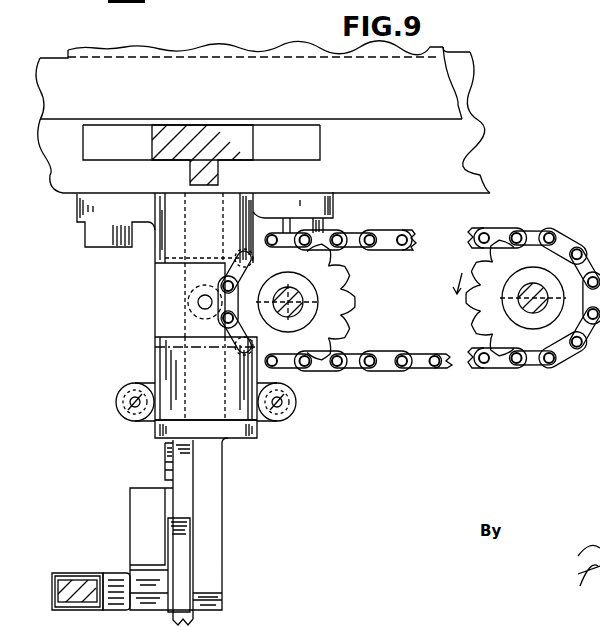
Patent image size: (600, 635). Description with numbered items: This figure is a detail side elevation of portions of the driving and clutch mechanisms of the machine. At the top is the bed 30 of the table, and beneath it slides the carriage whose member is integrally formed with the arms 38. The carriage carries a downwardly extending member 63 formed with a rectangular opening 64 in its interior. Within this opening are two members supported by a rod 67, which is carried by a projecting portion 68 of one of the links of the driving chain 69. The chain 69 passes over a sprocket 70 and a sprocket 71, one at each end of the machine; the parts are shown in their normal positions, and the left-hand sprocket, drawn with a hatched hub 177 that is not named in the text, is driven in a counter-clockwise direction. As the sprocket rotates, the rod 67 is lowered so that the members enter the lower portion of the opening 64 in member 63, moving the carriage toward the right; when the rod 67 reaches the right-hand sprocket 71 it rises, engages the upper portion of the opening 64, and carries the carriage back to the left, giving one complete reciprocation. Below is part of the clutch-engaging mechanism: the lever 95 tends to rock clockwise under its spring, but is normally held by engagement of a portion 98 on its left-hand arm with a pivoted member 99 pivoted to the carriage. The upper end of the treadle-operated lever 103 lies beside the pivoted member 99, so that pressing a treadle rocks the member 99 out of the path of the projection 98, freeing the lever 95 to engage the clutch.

The bed 30 is at (199, 57).
The arms 38 is at (232, 161).
The downwardly extending member 63 is at (160, 358).
The rectangular opening 64 is at (221, 412).
The rod 67 is at (198, 302).
The projecting portion 68 is at (197, 317).
The driving chain 69 is at (388, 245).
The sprocket 70 is at (332, 294).
The sprocket 71 is at (480, 303).
The shaft 177 is at (292, 314).
The pivoted member 99 is at (183, 498).
The lever 103 is at (183, 541).
The portion 98 is at (110, 580).
The lever 95 is at (72, 578).